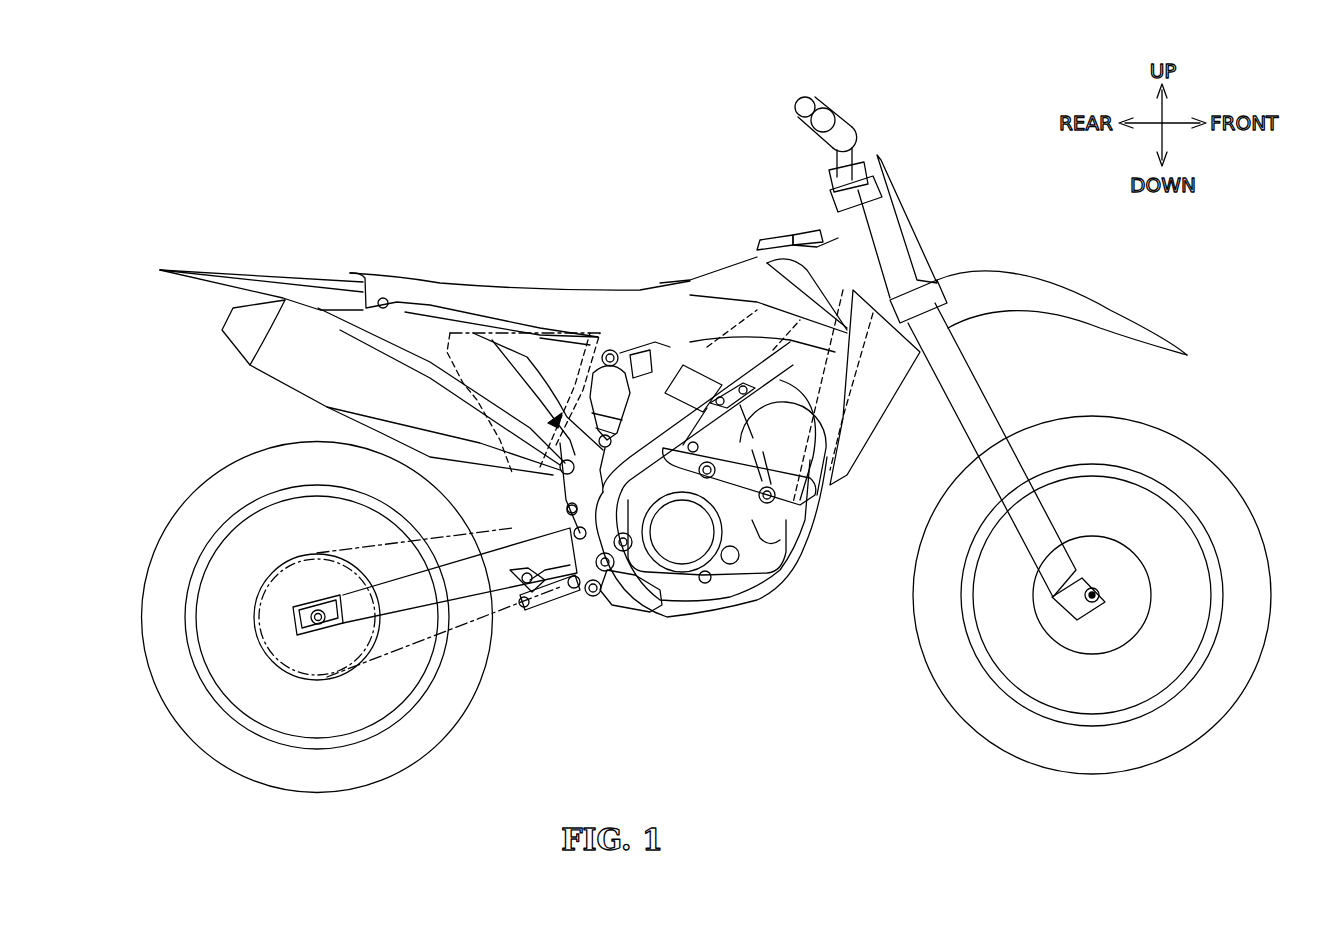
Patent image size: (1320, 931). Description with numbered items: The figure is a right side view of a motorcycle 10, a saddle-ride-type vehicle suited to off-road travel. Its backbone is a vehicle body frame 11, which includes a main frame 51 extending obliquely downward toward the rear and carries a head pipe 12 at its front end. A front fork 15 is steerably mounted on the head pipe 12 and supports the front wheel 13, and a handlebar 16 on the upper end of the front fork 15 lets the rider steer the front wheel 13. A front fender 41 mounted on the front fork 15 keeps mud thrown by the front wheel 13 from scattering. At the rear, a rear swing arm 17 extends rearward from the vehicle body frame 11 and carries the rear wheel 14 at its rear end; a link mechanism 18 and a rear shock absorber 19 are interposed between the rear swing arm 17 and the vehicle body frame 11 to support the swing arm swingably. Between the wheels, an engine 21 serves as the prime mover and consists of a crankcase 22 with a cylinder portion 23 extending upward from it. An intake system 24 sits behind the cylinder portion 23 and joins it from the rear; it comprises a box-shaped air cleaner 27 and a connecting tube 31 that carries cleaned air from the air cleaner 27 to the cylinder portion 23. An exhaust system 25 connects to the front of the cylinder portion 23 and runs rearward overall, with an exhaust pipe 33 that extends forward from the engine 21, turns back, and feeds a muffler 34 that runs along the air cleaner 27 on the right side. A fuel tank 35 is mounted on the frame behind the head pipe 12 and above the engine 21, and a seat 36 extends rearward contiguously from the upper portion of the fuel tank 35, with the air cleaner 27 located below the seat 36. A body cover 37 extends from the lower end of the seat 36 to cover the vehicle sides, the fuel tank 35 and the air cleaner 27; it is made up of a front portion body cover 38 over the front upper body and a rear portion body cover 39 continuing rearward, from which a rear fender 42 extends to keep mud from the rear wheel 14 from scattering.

The motorcycle 10 is at (940, 178).
The vehicle body frame 11 is at (905, 232).
The head pipe 12 is at (900, 272).
The front wheel 13 is at (975, 702).
The rear wheel 14 is at (378, 768).
The front fork 15 is at (965, 392).
The handlebar 16 is at (862, 157).
The rear swing arm 17 is at (463, 590).
The link mechanism 18 is at (565, 625).
The rear shock absorber 19 is at (632, 372).
The engine 21 is at (730, 583).
The crankcase 22 is at (682, 553).
The cylinder portion 23 is at (813, 450).
The intake system 24 is at (676, 368).
The exhaust system 25 is at (520, 503).
The air cleaner 27 is at (567, 333).
The connecting tube 31 is at (606, 380).
The exhaust pipe 33 is at (810, 507).
The muffler 34 is at (288, 370).
The fuel tank 35 is at (777, 240).
The seat 36 is at (508, 298).
The body cover 37 is at (708, 287).
The front portion body cover 38 is at (727, 310).
The rear portion body cover 39 is at (475, 320).
The front fender 41 is at (1125, 320).
The rear fender 42 is at (262, 283).
The main frame 51 is at (690, 390).